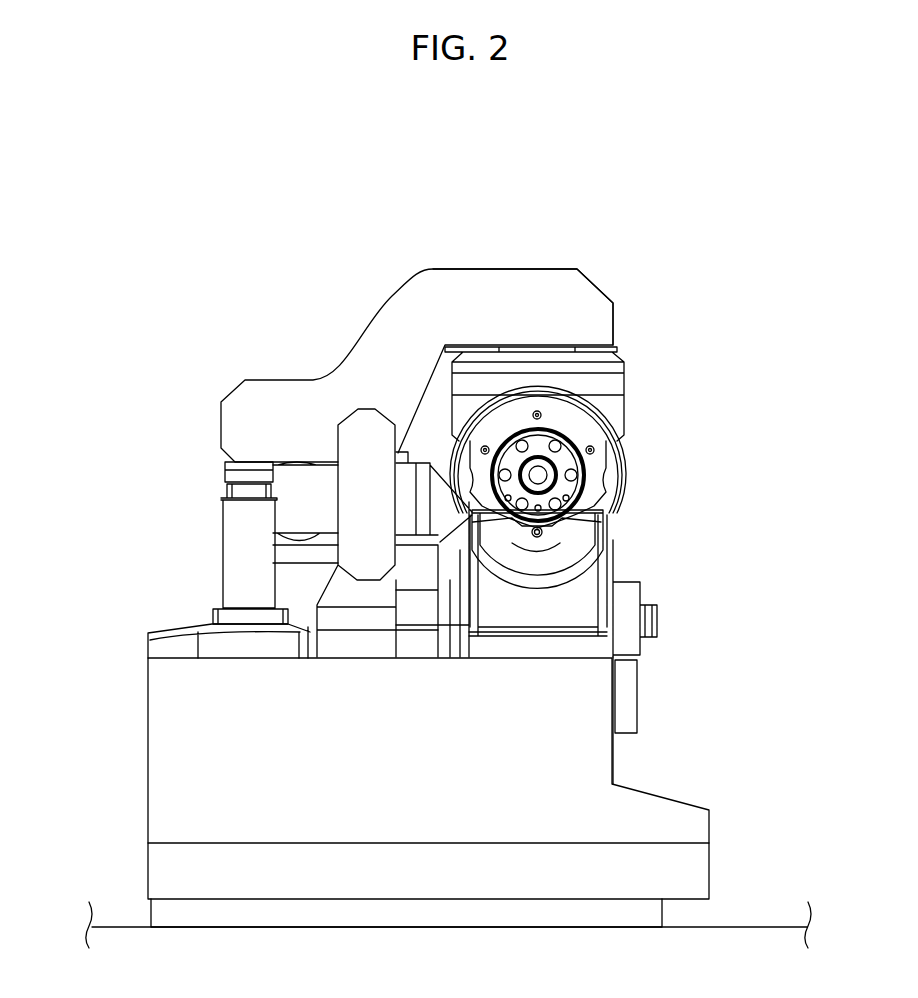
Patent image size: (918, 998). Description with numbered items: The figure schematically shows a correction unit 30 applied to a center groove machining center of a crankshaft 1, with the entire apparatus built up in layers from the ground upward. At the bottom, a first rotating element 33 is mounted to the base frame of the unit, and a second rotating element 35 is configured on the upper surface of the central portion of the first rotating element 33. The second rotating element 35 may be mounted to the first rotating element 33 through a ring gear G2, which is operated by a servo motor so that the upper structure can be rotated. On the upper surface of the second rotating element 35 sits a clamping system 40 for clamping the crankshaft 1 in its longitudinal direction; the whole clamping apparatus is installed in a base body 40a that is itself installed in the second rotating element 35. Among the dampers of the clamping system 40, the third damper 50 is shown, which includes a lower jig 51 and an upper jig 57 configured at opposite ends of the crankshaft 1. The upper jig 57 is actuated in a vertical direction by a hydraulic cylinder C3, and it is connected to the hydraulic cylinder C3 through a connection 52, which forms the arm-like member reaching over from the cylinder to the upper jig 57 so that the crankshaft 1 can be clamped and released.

The correction unit 30 is at (384, 186).
The connection 52 is at (578, 291).
The clamping system 40 is at (322, 350).
The third damper 50 is at (626, 350).
The upper jig 57 is at (606, 397).
The crankshaft 1 is at (560, 432).
The hydraulic cylinder C3 is at (248, 554).
The lower jig 51 is at (607, 598).
The base body 40a is at (596, 752).
The first rotating element 33 is at (128, 915).
The second rotating element 35 is at (688, 855).
The ring gear G2 is at (645, 915).